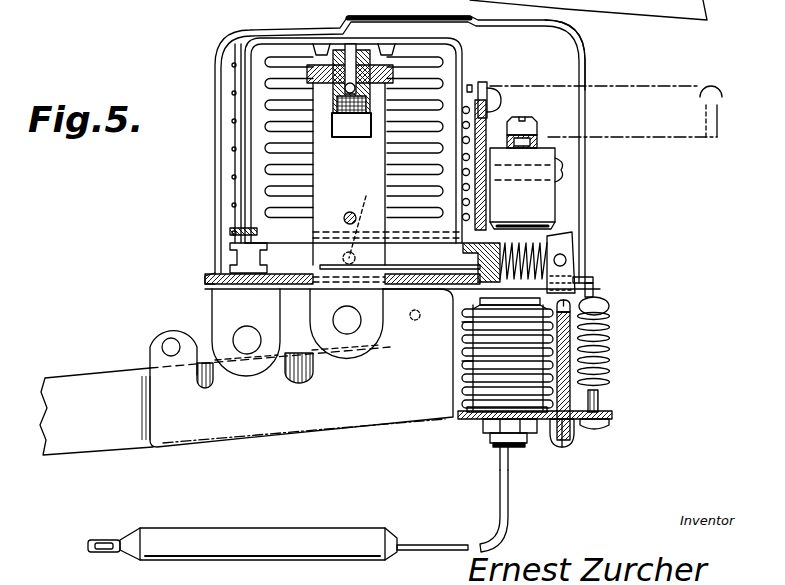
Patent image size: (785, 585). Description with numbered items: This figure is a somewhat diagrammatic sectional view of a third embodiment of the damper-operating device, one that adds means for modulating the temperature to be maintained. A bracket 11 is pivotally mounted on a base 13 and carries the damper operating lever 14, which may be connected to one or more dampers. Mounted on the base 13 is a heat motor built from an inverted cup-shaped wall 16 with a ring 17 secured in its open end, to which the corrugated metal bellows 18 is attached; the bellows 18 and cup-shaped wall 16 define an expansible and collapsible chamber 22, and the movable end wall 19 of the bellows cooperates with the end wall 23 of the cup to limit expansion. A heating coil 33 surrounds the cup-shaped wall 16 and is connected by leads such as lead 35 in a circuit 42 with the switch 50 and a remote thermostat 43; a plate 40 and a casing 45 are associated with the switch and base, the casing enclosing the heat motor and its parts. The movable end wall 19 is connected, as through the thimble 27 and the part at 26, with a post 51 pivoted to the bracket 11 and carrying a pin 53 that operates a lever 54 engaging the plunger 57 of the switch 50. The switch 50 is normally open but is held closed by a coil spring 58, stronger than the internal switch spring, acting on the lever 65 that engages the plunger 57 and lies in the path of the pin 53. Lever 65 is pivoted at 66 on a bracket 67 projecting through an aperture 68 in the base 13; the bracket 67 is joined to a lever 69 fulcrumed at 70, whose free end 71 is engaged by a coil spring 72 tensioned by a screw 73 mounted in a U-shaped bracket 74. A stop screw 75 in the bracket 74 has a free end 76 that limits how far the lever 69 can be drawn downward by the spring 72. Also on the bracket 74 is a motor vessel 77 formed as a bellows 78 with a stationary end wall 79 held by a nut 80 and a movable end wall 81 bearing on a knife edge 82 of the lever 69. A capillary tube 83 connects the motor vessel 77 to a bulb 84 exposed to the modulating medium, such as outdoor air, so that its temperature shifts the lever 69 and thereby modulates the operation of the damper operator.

The bracket 11 is at (248, 420).
The base 13 is at (215, 292).
The damper operating lever 14 is at (93, 440).
The cup-shaped wall 16 is at (463, 61).
The ring 17 is at (250, 244).
The bellows 18 is at (235, 107).
The end wall 19 is at (428, 38).
The chamber 22 is at (228, 43).
The end wall 23 is at (352, 40).
The bolt 26 is at (347, 56).
The thimble 27 is at (315, 62).
The heating coil 33 is at (247, 229).
The lead 35 is at (467, 184).
The plate 40 is at (500, 128).
The circuit 42 is at (647, 83).
The thermostat 43 is at (715, 92).
The casing 45 is at (587, 60).
The switch 50 is at (538, 185).
The post 51 is at (333, 193).
The pin 53 is at (364, 221).
The lever 54 is at (482, 76).
The plunger 57 is at (518, 236).
The coil spring 58 is at (548, 246).
The lever 65 is at (412, 271).
The pivot 66 is at (567, 260).
The bracket 67 is at (574, 279).
The aperture 68 is at (594, 288).
The lever 69 is at (540, 310).
The fulcrum 70 is at (480, 245).
The free end 71 is at (605, 303).
The coil spring 72 is at (610, 354).
The screw 73 is at (598, 400).
The U-shaped bracket 74 is at (612, 415).
The stop screw 75 is at (562, 446).
The free end 76 is at (600, 328).
The motor vessel 77 is at (490, 382).
The bellows 78 is at (465, 360).
The stationary end wall 79 is at (490, 435).
The nut 80 is at (512, 455).
The movable end wall 81 is at (477, 298).
The knife edge 82 is at (478, 330).
The capillary tube 83 is at (510, 528).
The bulb 84 is at (258, 537).